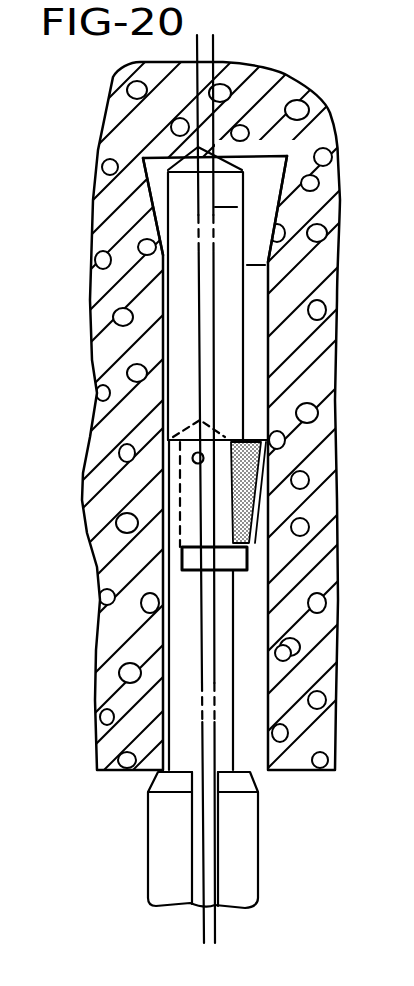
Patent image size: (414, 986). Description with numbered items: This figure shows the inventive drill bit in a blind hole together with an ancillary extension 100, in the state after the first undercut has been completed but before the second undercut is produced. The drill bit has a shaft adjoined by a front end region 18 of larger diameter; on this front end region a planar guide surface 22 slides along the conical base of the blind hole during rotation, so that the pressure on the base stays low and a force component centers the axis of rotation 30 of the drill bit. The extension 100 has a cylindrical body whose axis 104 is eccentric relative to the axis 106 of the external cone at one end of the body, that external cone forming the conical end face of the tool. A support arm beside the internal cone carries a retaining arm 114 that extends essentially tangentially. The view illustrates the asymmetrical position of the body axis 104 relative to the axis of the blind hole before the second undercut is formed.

The front end region 18 is at (176, 507).
The guide surface 22 is at (173, 158).
The axis of rotation 30 is at (205, 665).
The ancillary extension 100 is at (238, 283).
The axis of the body 104 is at (151, 202).
The axis of the external cone 106 is at (282, 203).
The retaining arm 114 is at (250, 556).